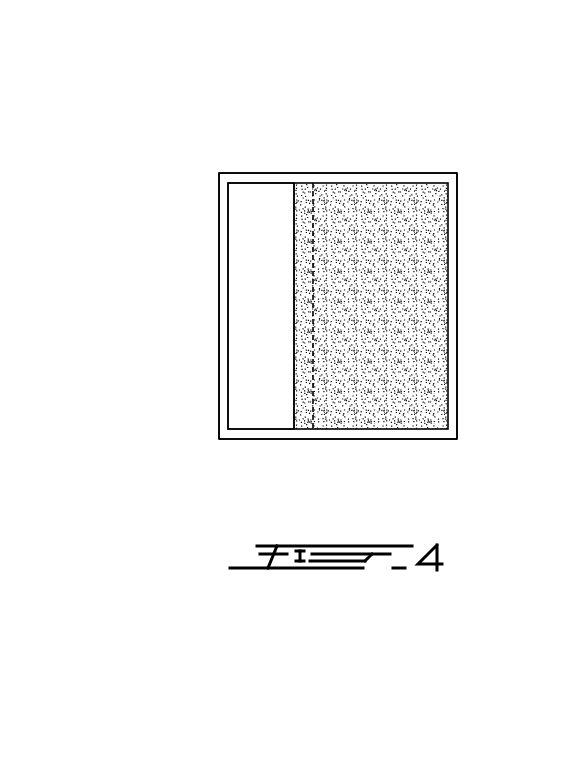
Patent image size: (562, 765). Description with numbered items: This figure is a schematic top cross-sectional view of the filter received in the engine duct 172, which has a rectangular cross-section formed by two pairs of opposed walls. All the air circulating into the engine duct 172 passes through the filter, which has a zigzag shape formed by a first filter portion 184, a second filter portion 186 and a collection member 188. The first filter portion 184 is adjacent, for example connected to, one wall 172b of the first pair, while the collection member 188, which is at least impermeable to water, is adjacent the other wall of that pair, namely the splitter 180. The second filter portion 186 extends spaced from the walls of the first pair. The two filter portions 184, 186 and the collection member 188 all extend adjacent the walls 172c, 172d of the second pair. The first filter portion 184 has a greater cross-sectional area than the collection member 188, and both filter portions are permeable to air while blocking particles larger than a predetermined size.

The engine duct 172 is at (279, 173).
The wall of first pair 172b is at (452, 277).
The wall of second pair 172c is at (383, 173).
The wall of second pair 172d is at (392, 439).
The splitter 180 is at (228, 268).
The first filter portion 184 is at (407, 337).
The second filter portion 186 is at (306, 430).
The collection member 188 is at (261, 402).